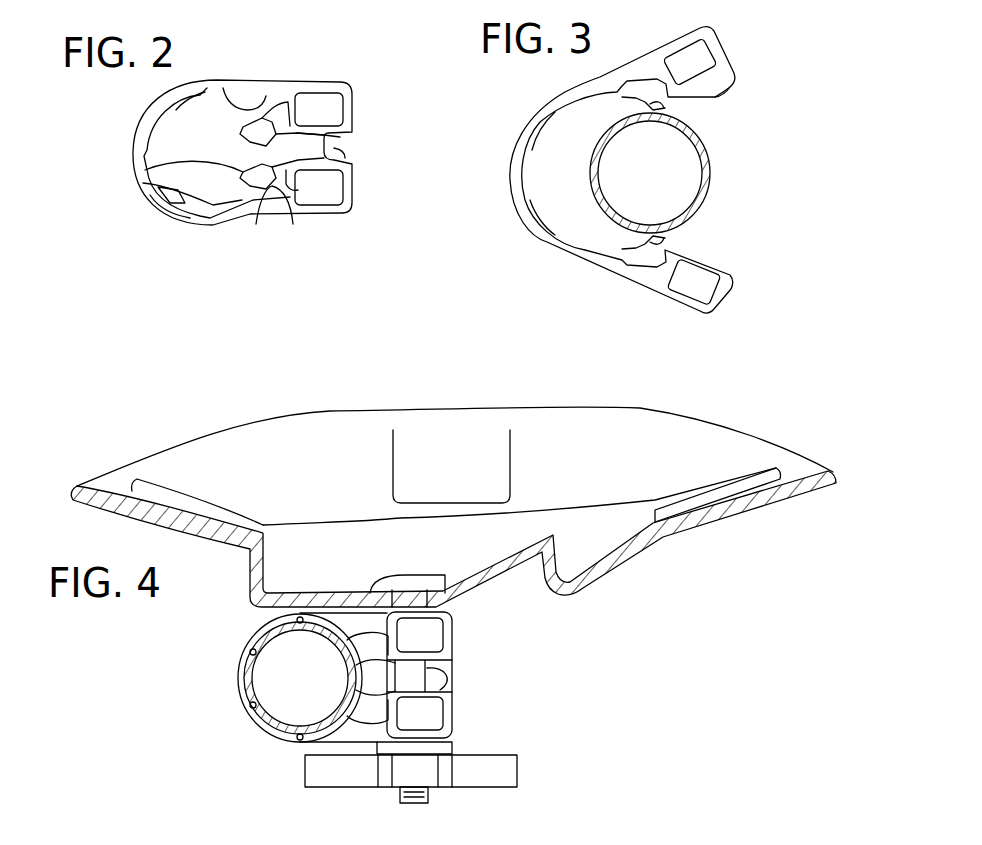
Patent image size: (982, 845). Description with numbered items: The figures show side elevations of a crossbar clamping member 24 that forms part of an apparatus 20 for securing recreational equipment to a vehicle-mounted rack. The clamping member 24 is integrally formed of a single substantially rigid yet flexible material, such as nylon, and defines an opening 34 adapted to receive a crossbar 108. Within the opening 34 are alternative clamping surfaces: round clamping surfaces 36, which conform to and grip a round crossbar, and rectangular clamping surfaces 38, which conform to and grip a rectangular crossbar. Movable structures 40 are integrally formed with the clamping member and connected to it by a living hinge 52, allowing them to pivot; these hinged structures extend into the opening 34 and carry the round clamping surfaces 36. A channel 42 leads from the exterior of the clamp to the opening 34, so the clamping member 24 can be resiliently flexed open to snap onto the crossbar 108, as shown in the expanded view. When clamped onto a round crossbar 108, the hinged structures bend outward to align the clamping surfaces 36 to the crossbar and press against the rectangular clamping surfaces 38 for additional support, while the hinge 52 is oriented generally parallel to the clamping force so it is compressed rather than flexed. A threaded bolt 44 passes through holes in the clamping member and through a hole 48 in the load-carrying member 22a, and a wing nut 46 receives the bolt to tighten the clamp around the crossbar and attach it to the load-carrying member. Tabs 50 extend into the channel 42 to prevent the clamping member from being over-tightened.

In FIG. 4, the apparatus for securing recreational equipment 20 is at (628, 727).
In FIG. 4, the load-carrying member 22a is at (655, 550).
In FIG. 2, the clamping member 24 is at (243, 82).
In FIG. 3, the clamping member 24 is at (628, 271).
In FIG. 4, the clamping member 24 is at (247, 655).
In FIG. 2, the opening 34 is at (172, 137).
In FIG. 3, the opening 34 is at (548, 143).
In FIG. 2, the round clamping surfaces 36 is at (143, 183).
In FIG. 3, the round clamping surfaces 36 is at (623, 115).
In FIG. 2, the rectangular clamping surfaces 38 is at (223, 88).
In FIG. 2, the movable structures 40 is at (264, 122).
In FIG. 3, the movable structures 40 is at (658, 102).
In FIG. 4, the movable structures 40 is at (362, 655).
In FIG. 2, the channel 42 is at (300, 130).
In FIG. 4, the threaded bolt 44 is at (430, 672).
In FIG. 4, the wing nut 46 is at (505, 760).
In FIG. 4, the hole 48 is at (486, 568).
In FIG. 2, the tabs 50 is at (340, 152).
In FIG. 3, the tabs 50 is at (722, 88).
In FIG. 4, the tabs 50 is at (450, 684).
In FIG. 2, the living hinge 52 is at (308, 152).
In FIG. 3, the living hinge 52 is at (652, 100).
In FIG. 4, the living hinge 52 is at (360, 688).
In FIG. 3, the crossbar 108 is at (708, 190).
In FIG. 4, the crossbar 108 is at (248, 710).